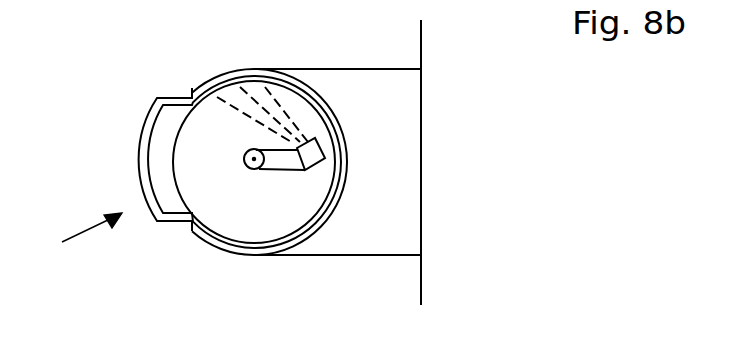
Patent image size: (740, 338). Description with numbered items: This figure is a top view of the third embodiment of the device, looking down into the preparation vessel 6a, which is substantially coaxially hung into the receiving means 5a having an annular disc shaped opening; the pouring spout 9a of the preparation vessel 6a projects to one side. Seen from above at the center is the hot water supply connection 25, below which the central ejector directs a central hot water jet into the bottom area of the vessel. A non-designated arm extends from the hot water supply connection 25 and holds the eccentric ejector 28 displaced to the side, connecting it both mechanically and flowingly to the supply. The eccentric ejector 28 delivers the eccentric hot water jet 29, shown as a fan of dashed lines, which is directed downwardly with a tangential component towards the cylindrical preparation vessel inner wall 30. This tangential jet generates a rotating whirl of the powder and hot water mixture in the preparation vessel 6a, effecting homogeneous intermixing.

The receiving means 5a is at (382, 186).
The preparation vessel 6a is at (73, 238).
The pouring spout 9a is at (170, 135).
The hot water supply connection 25 is at (254, 160).
The eccentric ejector 28 is at (316, 152).
The eccentric hot water jet 29 is at (267, 110).
The preparation vessel inner wall 30 is at (330, 180).